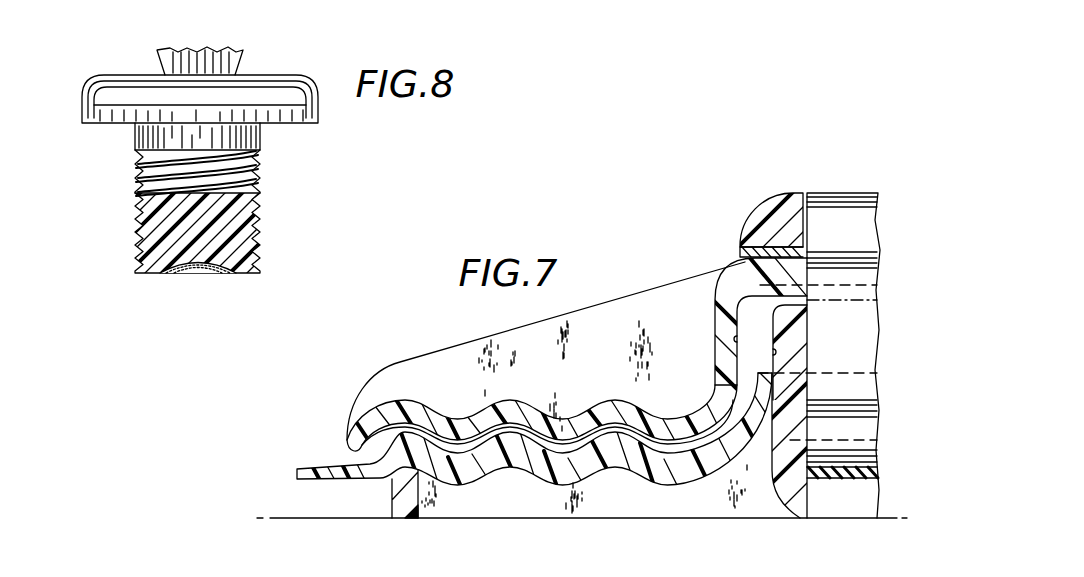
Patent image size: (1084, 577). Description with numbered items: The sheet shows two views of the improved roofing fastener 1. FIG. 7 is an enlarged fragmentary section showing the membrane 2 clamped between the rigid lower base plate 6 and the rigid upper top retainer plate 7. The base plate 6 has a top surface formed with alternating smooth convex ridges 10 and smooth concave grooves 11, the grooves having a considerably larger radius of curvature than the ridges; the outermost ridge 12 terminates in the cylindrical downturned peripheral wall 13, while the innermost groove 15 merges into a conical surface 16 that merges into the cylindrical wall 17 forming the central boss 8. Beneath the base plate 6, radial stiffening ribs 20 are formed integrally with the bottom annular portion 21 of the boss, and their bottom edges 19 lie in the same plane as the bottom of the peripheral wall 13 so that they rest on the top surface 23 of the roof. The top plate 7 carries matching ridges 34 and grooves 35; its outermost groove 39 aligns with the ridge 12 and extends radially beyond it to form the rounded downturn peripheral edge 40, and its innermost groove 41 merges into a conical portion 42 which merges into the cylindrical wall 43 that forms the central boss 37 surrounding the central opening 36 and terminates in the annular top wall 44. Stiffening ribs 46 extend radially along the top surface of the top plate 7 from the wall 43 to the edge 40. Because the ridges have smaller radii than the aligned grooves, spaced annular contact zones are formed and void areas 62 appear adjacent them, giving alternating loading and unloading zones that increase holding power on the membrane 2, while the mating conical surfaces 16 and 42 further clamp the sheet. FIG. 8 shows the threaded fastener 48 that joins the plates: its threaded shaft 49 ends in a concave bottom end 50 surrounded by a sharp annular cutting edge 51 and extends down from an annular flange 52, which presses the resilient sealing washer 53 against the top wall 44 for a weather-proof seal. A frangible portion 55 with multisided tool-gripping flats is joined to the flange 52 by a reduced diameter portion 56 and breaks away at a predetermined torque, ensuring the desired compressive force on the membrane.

In FIG. 7, the fastener 1 is at (712, 213).
In FIG. 7, the membrane 2 is at (322, 462).
In FIG. 7, the base plate 6 is at (528, 480).
In FIG. 7, the top retainer plate 7 is at (469, 333).
In FIG. 7, the central boss 8 is at (792, 323).
In FIG. 7, the ridges 10 is at (512, 447).
In FIG. 7, the grooves 11 is at (601, 482).
In FIG. 7, the outermost ridge 12 is at (408, 452).
In FIG. 7, the peripheral wall 13 is at (403, 505).
In FIG. 7, the innermost groove 15 is at (678, 478).
In FIG. 7, the conical surface 16 is at (745, 430).
In FIG. 7, the cylindrical wall 17 is at (777, 353).
In FIG. 7, the bottom edges 19 is at (457, 519).
In FIG. 7, the stiffening ribs 20 is at (712, 498).
In FIG. 7, the bottom annular portion 21 is at (795, 500).
In FIG. 7, the top surface 23 is at (305, 517).
In FIG. 7, the ridges 34 is at (473, 468).
In FIG. 7, the grooves 35 is at (527, 415).
In FIG. 7, the central opening 36 is at (724, 326).
In FIG. 7, the central boss 37 is at (720, 349).
In FIG. 7, the outermost groove 39 is at (383, 420).
In FIG. 7, the downturn peripheral edge 40 is at (350, 449).
In FIG. 7, the innermost groove 41 is at (613, 399).
In FIG. 7, the conical portion 42 is at (705, 415).
In FIG. 7, the cylindrical wall 43 is at (716, 376).
In FIG. 7, the top wall 44 is at (745, 264).
In FIG. 7, the stiffening ribs 46 is at (623, 316).
In FIG. 8, the threaded fastener 48 is at (130, 180).
In FIG. 7, the threaded fastener 48 is at (858, 230).
In FIG. 8, the threaded shaft 49 is at (262, 200).
In FIG. 8, the concave bottom end 50 is at (198, 273).
In FIG. 8, the annular cutting edge 51 is at (236, 273).
In FIG. 8, the annular flange 52 is at (100, 103).
In FIG. 7, the annular flange 52 is at (778, 220).
In FIG. 7, the resilient sealing washer 53 is at (822, 250).
In FIG. 8, the frangible portion 55 is at (230, 43).
In FIG. 8, the reduced diameter portion 56 is at (160, 65).
In FIG. 7, the void areas 62 is at (480, 445).